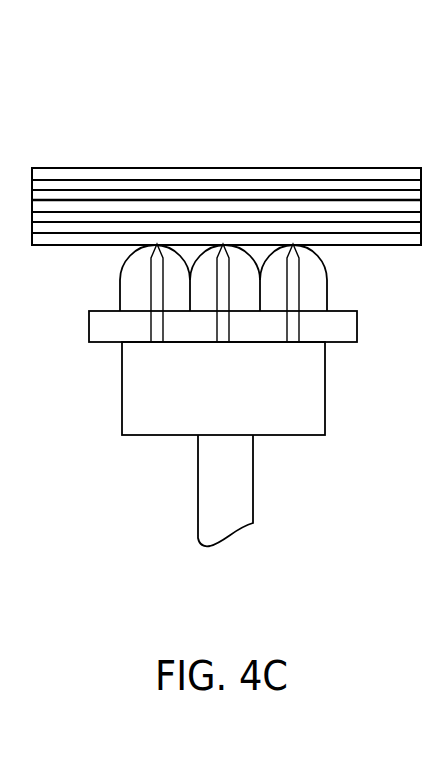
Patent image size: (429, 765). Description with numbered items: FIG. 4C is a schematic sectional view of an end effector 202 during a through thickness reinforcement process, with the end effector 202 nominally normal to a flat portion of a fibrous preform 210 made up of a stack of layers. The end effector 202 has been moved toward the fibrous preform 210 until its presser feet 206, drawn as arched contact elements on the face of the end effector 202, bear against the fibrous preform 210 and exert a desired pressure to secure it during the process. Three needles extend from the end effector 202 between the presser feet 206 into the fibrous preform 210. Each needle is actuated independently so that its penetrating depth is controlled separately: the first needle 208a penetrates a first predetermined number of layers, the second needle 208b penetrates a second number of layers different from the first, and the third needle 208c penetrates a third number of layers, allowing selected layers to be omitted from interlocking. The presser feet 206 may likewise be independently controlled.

The end effector 202 is at (132, 480).
The presser feet 206 is at (355, 289).
The first needle 208a is at (161, 245).
The second needle 208b is at (222, 243).
The third needle 208c is at (292, 243).
The fibrous preform 210 is at (347, 150).